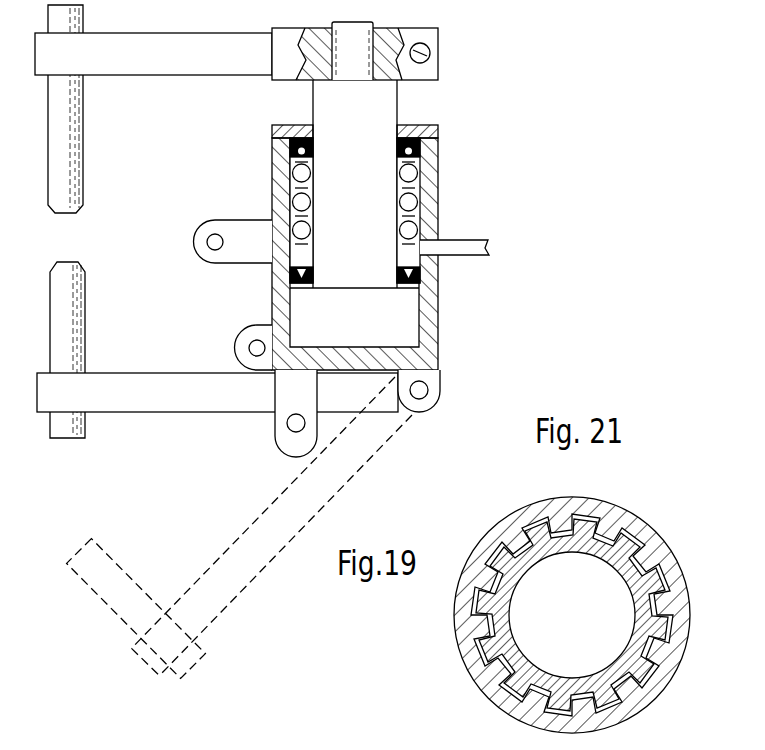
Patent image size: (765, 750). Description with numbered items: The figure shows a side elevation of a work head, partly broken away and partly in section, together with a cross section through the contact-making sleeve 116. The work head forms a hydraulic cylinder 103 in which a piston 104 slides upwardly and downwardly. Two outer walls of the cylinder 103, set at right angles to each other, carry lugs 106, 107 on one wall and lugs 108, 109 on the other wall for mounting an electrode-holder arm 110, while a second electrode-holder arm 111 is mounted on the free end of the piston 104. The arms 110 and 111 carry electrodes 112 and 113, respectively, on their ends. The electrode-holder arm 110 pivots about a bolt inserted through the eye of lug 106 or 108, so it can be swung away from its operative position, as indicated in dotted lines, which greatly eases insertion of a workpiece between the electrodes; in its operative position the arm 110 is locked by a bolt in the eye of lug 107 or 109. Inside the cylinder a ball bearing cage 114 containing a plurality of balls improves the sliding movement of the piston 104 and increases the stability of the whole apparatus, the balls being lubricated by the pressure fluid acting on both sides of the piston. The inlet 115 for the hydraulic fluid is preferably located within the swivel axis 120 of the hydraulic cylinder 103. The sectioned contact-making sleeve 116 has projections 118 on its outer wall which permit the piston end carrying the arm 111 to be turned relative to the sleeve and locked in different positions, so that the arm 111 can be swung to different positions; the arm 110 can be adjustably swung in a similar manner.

In FIG. 19, the hydraulic cylinder 103 is at (430, 195).
In FIG. 19, the piston 104 is at (382, 103).
In FIG. 19, the lug 106 is at (430, 413).
In FIG. 19, the lug 107 is at (273, 445).
In FIG. 19, the lug 108 is at (238, 350).
In FIG. 19, the lug 109 is at (205, 262).
In FIG. 19, the electrode-holder arm 110 is at (168, 410).
In FIG. 19, the second electrode-holder arm 111 is at (182, 70).
In FIG. 19, the electrode 112 is at (80, 337).
In FIG. 19, the electrode 113 is at (73, 152).
In FIG. 19, the ball bearing cage 114 is at (410, 225).
In FIG. 19, the inlet 115 is at (480, 255).
In FIG. 21, the contact-making sleeve 116 is at (518, 552).
In FIG. 21, the projections 118 is at (622, 542).
In FIG. 19, the swivel axis 120 is at (357, 742).